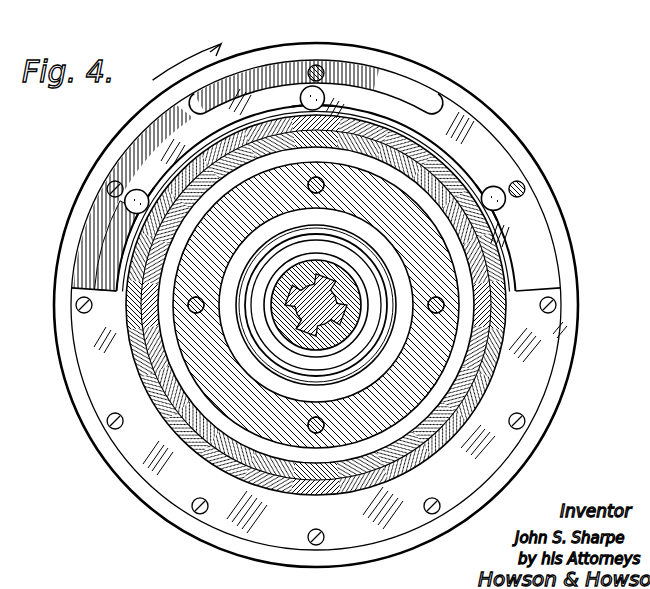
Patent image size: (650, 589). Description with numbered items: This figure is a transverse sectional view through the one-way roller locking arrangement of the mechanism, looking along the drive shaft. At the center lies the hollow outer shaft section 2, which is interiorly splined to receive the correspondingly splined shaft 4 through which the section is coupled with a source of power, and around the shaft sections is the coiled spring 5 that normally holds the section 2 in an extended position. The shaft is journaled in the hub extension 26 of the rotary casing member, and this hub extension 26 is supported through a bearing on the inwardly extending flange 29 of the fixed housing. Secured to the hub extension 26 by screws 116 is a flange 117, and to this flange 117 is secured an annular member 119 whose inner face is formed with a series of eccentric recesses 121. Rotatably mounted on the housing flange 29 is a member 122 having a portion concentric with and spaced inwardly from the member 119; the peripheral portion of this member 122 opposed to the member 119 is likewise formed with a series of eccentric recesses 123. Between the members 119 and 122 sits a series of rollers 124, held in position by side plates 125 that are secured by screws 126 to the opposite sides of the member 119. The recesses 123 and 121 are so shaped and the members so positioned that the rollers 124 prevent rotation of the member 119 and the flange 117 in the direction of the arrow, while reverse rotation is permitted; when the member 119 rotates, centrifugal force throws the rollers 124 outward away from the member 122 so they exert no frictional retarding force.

The outer axially movable shaft section 2 is at (353, 323).
The splined shaft 4 is at (338, 290).
The coiled spring 5 is at (368, 375).
The hub extension 26 is at (352, 412).
The inwardly extending flange of the housing 29 is at (458, 383).
The screws 116 is at (190, 305).
The flange 117 is at (77, 203).
The annular member 119 is at (87, 264).
The eccentric recesses 121 is at (160, 143).
The member rotatably mounted on the flange 122 is at (133, 346).
The eccentric recesses 123 is at (298, 102).
The rollers 124 is at (326, 86).
The side plates 125 is at (134, 448).
The screws 126 is at (108, 421).